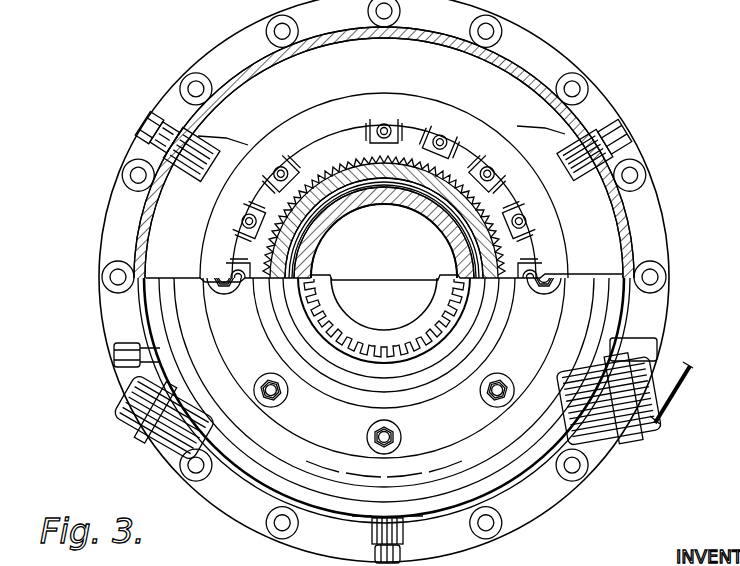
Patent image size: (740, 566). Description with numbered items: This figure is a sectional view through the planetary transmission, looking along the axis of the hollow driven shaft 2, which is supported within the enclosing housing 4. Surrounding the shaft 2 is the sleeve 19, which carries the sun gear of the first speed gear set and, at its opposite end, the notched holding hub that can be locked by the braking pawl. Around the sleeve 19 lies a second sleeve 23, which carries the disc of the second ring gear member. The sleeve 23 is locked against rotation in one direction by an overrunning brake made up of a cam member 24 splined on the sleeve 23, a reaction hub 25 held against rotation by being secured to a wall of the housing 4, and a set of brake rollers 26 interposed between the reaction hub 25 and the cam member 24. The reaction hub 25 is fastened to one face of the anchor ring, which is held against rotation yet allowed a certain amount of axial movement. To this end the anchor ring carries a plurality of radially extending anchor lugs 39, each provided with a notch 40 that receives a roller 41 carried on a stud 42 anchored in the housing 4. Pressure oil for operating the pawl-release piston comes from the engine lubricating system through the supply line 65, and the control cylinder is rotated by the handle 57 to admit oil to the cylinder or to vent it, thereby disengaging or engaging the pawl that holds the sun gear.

The shaft 2 is at (329, 215).
The housing 4 is at (386, 32).
The sleeve 19 is at (386, 181).
The sleeve 23 is at (368, 128).
The cam member 24 is at (458, 150).
The reaction hub 25 is at (309, 112).
The brake rollers 26 is at (244, 222).
The anchor lugs 39 is at (230, 151).
The notch 40 is at (178, 142).
The roller 41 is at (198, 193).
The stud 42 is at (188, 147).
The handle 57 is at (690, 388).
The supply line 65 is at (640, 364).